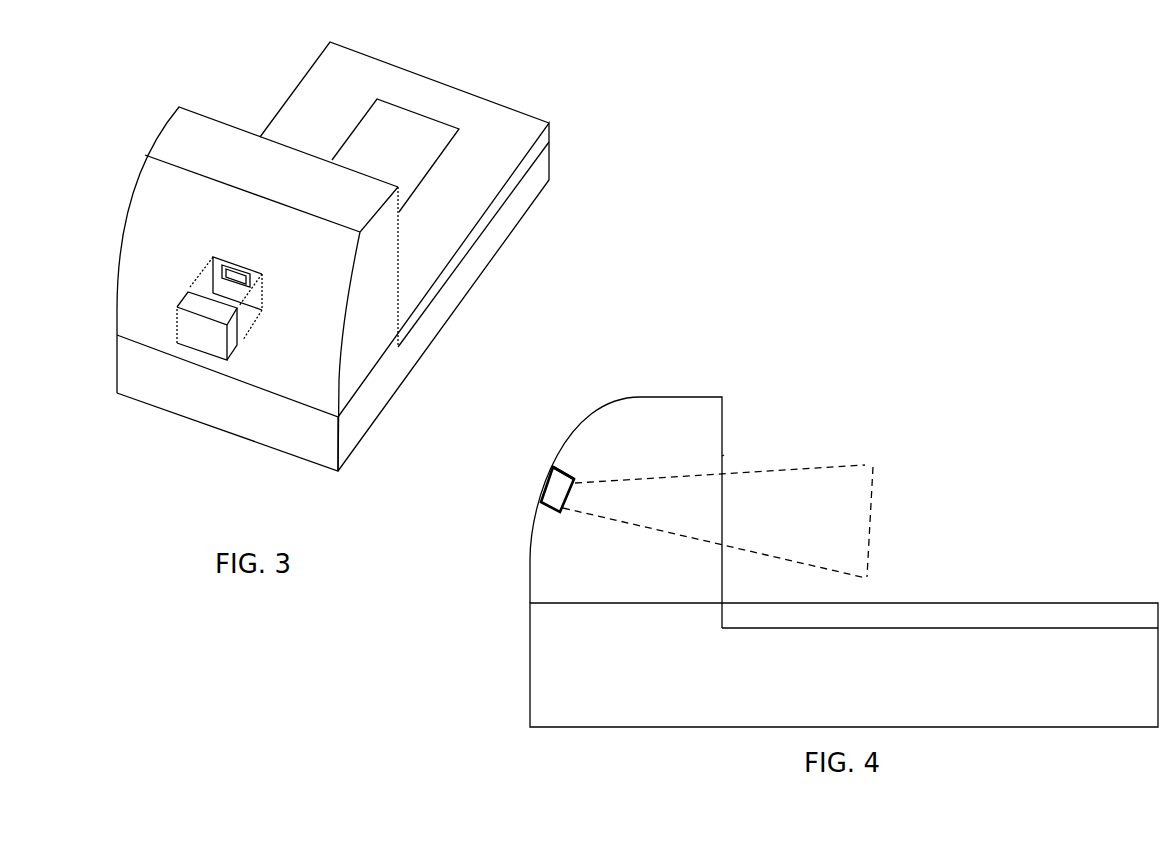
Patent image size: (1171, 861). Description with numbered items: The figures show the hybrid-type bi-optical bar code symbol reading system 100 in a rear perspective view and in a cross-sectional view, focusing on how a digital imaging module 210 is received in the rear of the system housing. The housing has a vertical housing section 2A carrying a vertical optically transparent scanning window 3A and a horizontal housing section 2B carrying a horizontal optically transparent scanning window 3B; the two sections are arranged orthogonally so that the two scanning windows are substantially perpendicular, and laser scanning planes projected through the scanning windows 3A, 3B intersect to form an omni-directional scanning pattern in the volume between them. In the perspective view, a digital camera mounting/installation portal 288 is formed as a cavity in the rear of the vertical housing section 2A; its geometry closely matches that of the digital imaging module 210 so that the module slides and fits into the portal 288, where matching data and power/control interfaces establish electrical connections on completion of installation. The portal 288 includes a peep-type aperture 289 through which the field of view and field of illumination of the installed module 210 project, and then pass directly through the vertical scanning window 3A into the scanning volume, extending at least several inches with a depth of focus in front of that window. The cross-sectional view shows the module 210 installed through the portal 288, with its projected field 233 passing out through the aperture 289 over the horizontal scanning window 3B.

In FIG. 3, the hybrid-type bi-optical bar code symbol reading system 100 is at (602, 241).
In FIG. 4, the hybrid-type bi-optical bar code symbol reading system 100 is at (1027, 425).
In FIG. 3, the vertical housing section 2A is at (175, 137).
In FIG. 4, the vertical housing section 2A is at (677, 395).
In FIG. 3, the horizontal housing section 2B is at (256, 413).
In FIG. 4, the horizontal housing section 2B is at (528, 670).
In FIG. 4, the vertical scanning window 3A is at (722, 456).
In FIG. 3, the horizontal scanning window 3B is at (411, 153).
In FIG. 4, the horizontal scanning window 3B is at (973, 603).
In FIG. 3, the digital imaging module 210 is at (203, 337).
In FIG. 4, the digital imaging module 210 is at (548, 478).
In FIG. 4, the detection region 233 is at (863, 465).
In FIG. 3, the digital camera mounting/installation portal 288 is at (225, 253).
In FIG. 4, the digital camera mounting/installation portal 288 is at (560, 453).
In FIG. 3, the peep-type aperture 289 is at (235, 278).